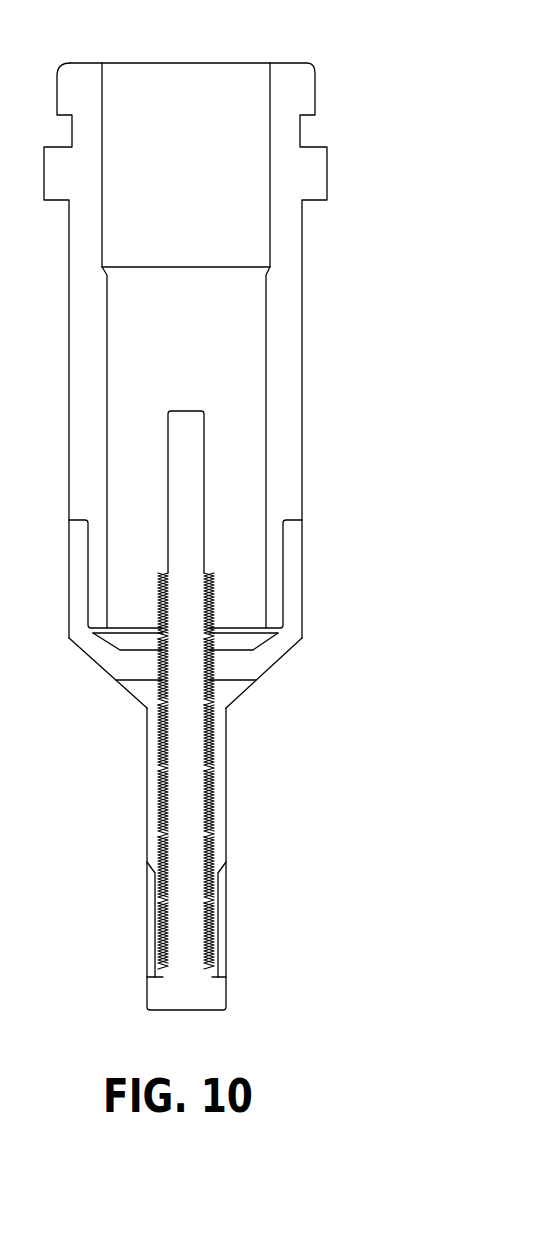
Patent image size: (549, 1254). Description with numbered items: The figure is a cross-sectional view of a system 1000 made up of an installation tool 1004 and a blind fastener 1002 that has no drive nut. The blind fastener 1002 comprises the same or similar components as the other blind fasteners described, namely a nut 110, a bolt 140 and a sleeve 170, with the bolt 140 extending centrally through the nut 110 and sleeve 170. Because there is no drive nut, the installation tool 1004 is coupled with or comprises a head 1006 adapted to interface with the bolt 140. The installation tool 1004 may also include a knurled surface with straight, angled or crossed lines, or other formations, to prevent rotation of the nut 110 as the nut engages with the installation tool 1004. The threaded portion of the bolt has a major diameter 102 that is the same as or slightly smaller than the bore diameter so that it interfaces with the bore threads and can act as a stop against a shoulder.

The system 1000 is at (263, 536).
The installation tool 1004 is at (252, 350).
The head 1006 is at (293, 588).
The major diameter 102 is at (228, 680).
The nut 110 is at (213, 745).
The bolt 140 is at (183, 837).
The blind fastener 1002 is at (275, 710).
The sleeve 170 is at (213, 970).